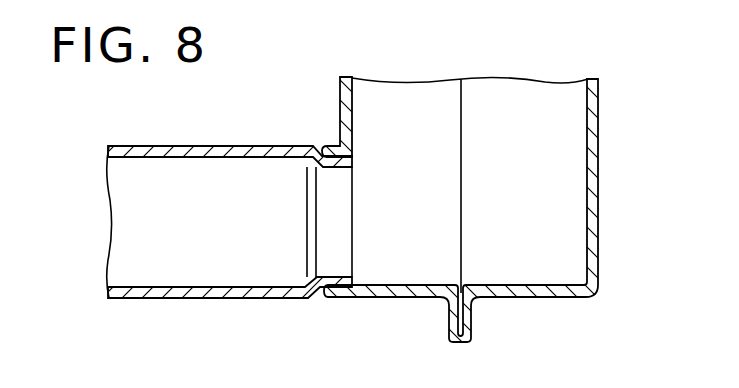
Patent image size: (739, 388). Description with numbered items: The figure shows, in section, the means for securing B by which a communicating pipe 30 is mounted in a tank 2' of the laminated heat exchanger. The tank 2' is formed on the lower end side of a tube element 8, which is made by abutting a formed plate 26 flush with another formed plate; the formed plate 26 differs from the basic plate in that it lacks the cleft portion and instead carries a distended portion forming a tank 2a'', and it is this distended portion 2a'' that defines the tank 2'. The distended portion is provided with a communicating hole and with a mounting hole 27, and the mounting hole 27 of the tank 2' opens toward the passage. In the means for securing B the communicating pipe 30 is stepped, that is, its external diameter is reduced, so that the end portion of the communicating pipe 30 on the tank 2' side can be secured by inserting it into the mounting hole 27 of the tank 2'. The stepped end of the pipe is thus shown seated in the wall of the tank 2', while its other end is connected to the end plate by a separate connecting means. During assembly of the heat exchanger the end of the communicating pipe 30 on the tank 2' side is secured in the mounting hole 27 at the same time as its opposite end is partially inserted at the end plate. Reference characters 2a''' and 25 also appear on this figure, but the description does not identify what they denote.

The communicating pipe 30 is at (173, 298).
The means for securing B is at (308, 302).
The mounting hole 27 is at (341, 297).
The tank 2' is at (493, 209).
The distended portion forming a tank 2a'' is at (320, 117).
The header tube wall portion 2a''' is at (627, 114).
The end wall of header tube 25 is at (398, 297).
The formed plate 26 is at (530, 297).
The tube element 8 is at (553, 302).